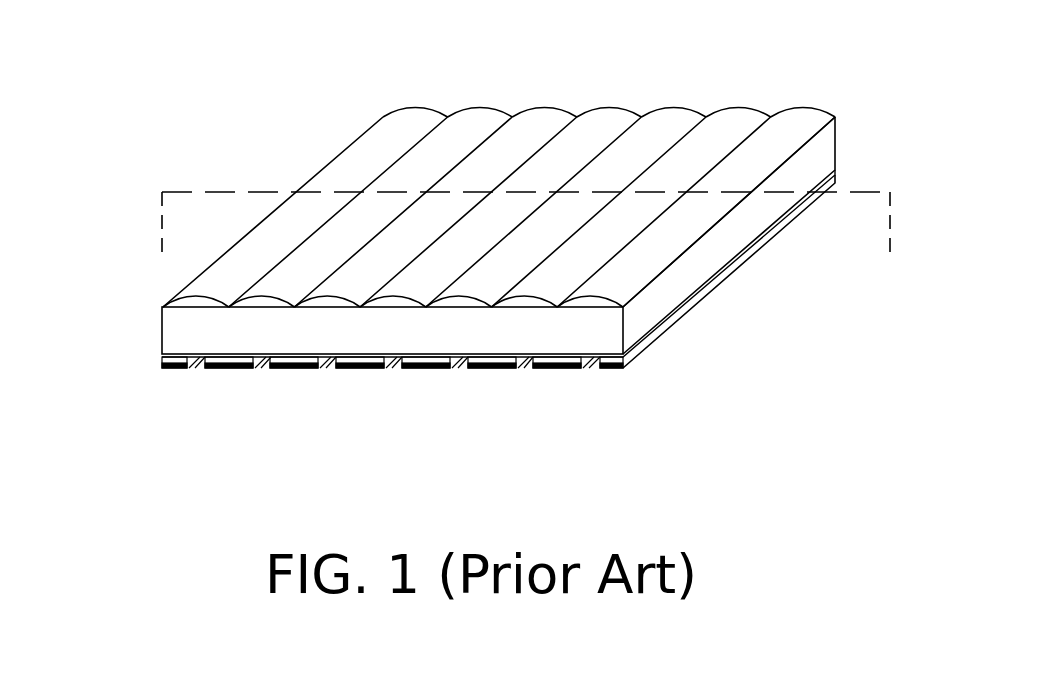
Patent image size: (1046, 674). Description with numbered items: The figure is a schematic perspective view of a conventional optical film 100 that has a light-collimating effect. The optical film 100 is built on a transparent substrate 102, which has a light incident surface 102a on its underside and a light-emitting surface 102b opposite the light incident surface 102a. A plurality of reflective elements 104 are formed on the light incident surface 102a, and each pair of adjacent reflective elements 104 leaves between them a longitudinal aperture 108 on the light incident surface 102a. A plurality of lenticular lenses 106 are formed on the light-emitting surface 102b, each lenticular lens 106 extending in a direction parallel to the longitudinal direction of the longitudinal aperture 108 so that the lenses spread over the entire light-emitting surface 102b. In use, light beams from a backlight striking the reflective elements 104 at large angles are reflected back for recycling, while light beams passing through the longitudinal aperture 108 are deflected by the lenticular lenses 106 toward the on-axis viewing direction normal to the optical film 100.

The optical film 100 is at (744, 32).
The transparent substrate 102 is at (160, 327).
The light incident surface 102a is at (624, 355).
The light-emitting surface 102b is at (624, 315).
The reflective elements 104 is at (173, 368).
The lenticular lenses 106 is at (193, 298).
The longitudinal aperture 108 is at (263, 368).